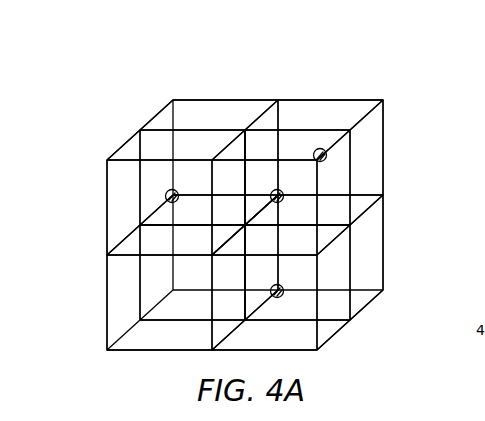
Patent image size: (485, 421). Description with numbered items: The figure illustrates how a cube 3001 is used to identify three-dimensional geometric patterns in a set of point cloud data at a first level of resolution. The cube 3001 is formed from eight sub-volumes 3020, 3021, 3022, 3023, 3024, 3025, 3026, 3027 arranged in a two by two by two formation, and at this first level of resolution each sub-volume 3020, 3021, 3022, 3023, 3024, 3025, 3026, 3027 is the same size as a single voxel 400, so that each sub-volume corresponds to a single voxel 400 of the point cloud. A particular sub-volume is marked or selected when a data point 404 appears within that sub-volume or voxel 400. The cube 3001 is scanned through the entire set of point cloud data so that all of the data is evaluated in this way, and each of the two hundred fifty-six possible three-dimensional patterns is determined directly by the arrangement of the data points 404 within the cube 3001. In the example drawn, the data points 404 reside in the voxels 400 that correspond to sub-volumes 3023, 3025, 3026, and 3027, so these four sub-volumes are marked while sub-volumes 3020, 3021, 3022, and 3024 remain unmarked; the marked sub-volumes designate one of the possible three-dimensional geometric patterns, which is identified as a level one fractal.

The cube 3001 is at (261, 218).
The sub-volume 3020 is at (137, 280).
The sub-volume 3021 is at (378, 249).
The sub-volume 3022 is at (112, 322).
The sub-volume 3023 is at (319, 330).
The sub-volume 3024 is at (166, 106).
The sub-volume 3025 is at (350, 99).
The sub-volume 3026 is at (112, 157).
The sub-volume 3027 is at (317, 182).
The voxel 400 is at (210, 100).
The data point 404 is at (272, 191).